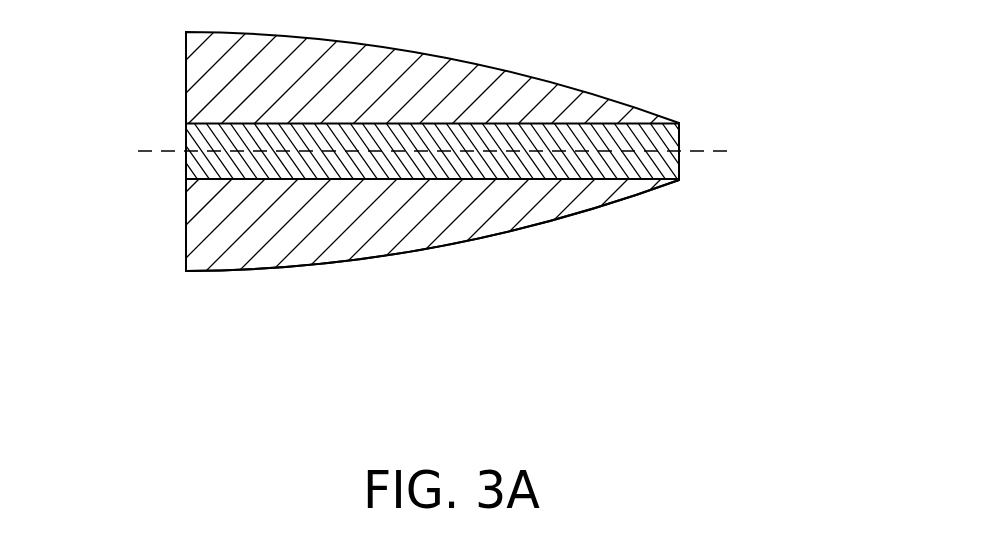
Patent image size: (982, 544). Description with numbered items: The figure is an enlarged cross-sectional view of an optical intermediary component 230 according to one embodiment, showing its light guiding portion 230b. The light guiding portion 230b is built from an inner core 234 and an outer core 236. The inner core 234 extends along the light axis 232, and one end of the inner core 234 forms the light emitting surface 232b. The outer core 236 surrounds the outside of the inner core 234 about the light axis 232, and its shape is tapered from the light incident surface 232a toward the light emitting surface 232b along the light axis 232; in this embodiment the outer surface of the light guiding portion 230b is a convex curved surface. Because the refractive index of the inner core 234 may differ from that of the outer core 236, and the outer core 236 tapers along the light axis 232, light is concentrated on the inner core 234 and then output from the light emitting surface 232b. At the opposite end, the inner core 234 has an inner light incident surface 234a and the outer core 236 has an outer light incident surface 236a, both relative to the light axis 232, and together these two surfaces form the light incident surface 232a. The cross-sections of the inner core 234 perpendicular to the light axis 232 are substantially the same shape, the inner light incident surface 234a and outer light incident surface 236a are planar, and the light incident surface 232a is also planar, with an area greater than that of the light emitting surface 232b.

The optical intermediary component 230 is at (855, 403).
The light guiding portion 230b is at (595, 333).
The light axis 232 is at (703, 145).
The light incident surface 232a is at (175, 335).
The light emitting surface 232b is at (679, 163).
The inner core 234 is at (580, 165).
The inner light incident surface 234a is at (186, 167).
The outer core 236 is at (490, 193).
The outer light incident surface 236a is at (186, 227).